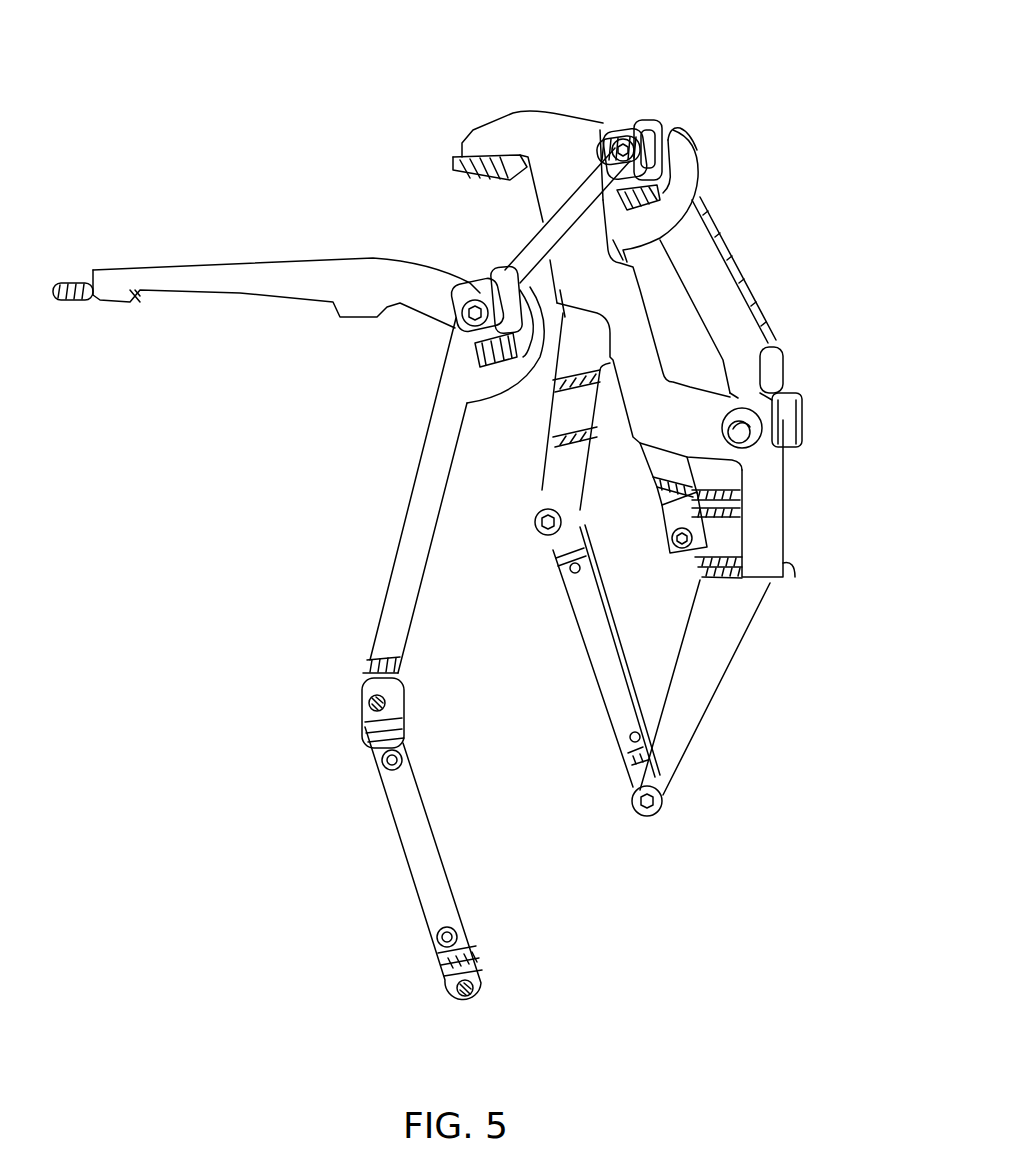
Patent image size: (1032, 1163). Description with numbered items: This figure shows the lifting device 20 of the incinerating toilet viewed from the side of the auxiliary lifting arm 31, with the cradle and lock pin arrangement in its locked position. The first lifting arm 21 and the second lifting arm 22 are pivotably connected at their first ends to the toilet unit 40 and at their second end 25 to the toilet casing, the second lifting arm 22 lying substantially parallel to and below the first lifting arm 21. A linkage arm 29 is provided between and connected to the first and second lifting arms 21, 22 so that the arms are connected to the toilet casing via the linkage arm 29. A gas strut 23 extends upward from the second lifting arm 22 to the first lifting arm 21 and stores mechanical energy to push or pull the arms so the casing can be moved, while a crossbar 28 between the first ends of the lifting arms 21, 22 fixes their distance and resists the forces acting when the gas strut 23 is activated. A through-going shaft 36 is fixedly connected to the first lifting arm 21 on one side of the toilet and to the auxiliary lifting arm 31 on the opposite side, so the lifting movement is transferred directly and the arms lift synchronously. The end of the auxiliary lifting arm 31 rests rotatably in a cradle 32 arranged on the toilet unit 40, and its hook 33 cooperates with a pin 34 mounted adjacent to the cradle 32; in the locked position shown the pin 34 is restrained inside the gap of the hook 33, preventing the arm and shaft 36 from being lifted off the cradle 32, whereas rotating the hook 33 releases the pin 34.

The lifting device 20 is at (206, 129).
The first lifting arm 21 is at (550, 493).
The second lifting arm 22 is at (692, 710).
The gas strut 23 is at (673, 460).
The second end 25 is at (377, 675).
The crossbar 28 is at (718, 270).
The linkage arm 29 is at (623, 703).
The auxiliary lifting arm 31 is at (413, 540).
The cradle 32 is at (607, 127).
The hook 33 is at (688, 133).
The pin 34 is at (477, 343).
The through-going shaft 36 is at (520, 252).
The toilet unit 40 is at (245, 283).